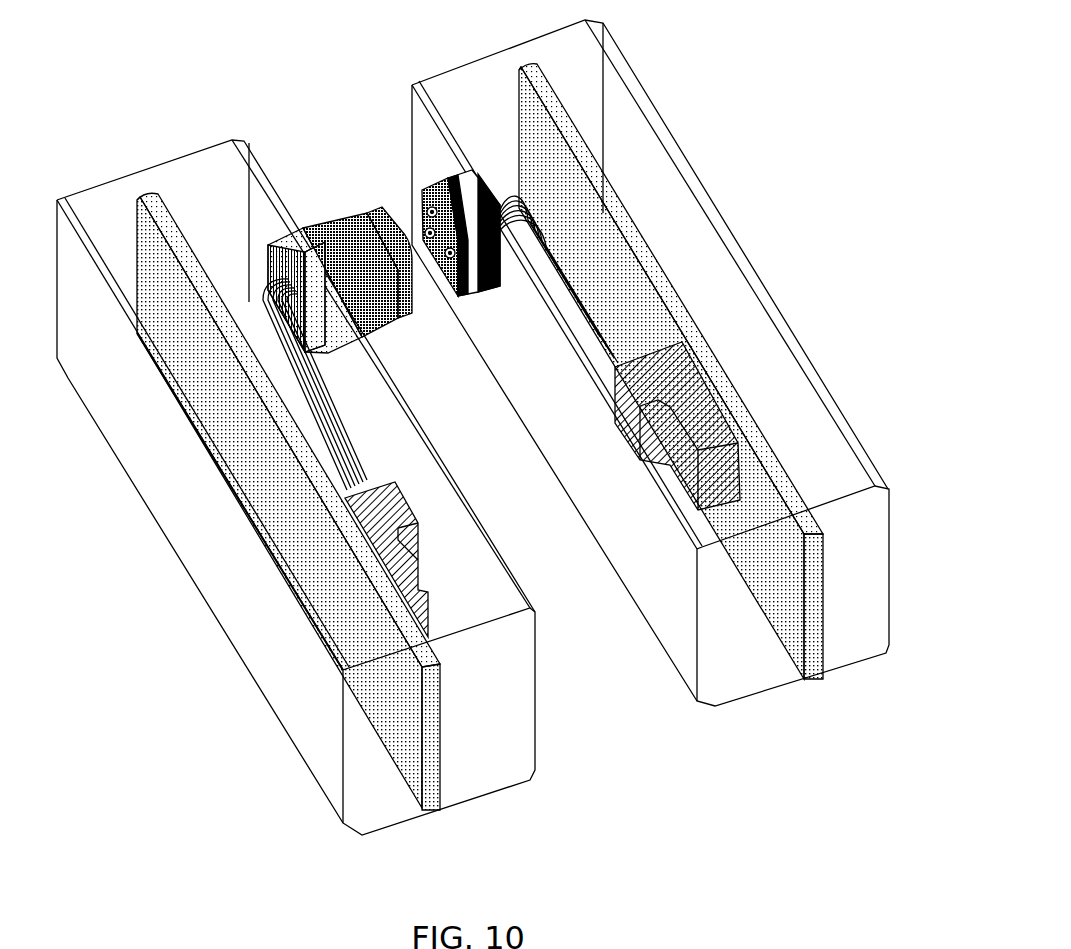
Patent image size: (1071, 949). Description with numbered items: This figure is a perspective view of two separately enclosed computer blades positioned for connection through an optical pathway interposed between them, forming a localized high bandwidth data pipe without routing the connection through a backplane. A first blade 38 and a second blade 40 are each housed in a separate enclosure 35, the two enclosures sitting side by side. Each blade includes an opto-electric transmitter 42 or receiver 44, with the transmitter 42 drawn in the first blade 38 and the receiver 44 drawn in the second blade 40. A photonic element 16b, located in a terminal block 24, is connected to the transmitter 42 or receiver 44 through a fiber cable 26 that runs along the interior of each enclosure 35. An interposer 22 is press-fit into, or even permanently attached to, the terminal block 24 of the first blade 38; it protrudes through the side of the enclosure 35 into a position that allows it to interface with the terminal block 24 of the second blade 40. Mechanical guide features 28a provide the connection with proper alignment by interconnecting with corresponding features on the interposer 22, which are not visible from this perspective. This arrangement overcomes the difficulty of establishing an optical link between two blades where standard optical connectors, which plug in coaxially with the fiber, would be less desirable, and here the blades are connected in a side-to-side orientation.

The enclosure 35 is at (451, 80).
The photonic element 16b is at (464, 199).
The terminal block 24 is at (440, 195).
The interposer 22 is at (378, 312).
The mechanical guide features 28a is at (431, 238).
The fiber cable 26 is at (597, 323).
The opto-electric transmitter 42 is at (390, 522).
The opto-electric receiver 44 is at (662, 428).
The first blade 38 is at (395, 745).
The second blade 40 is at (826, 673).